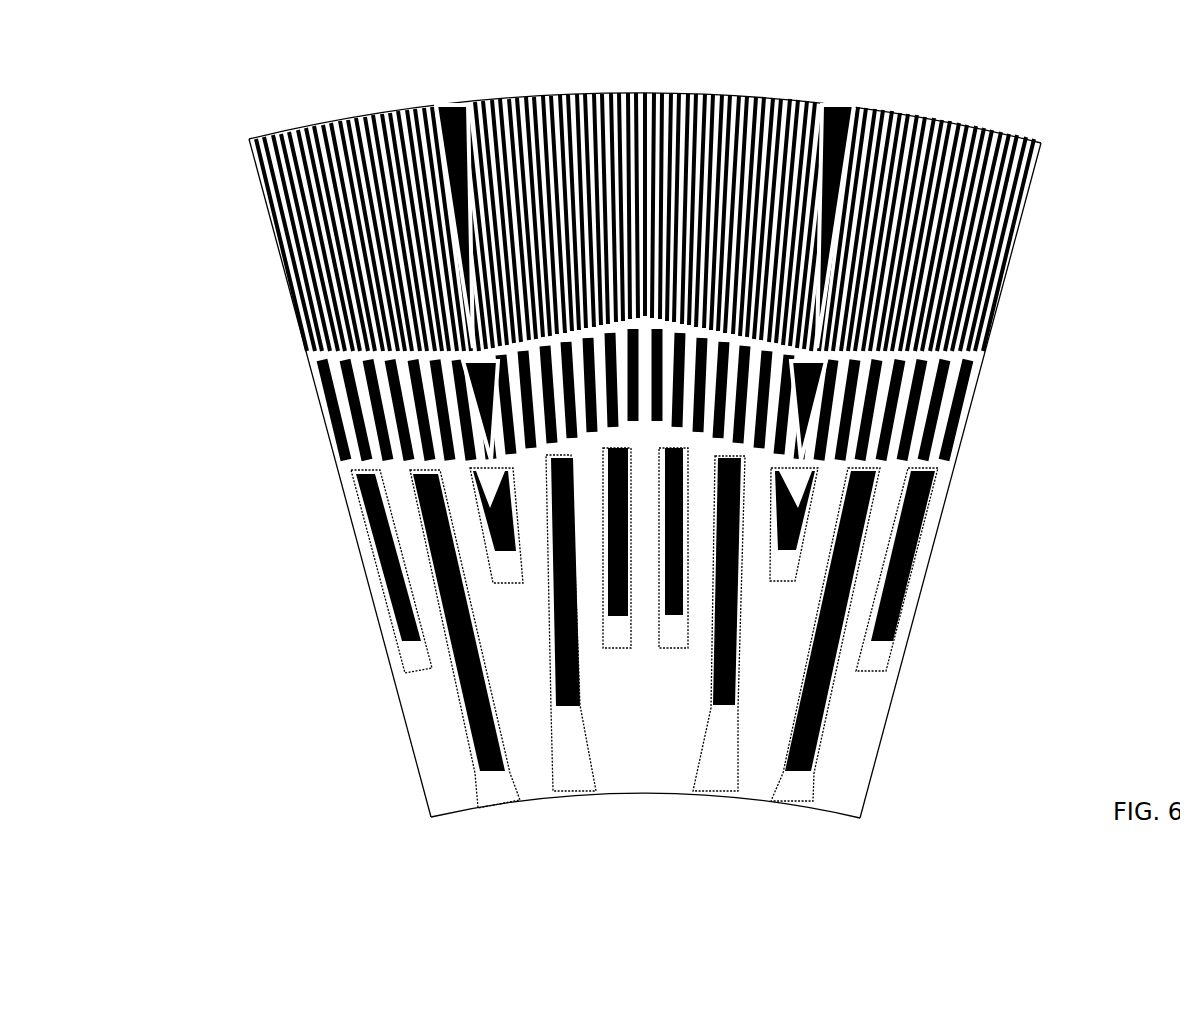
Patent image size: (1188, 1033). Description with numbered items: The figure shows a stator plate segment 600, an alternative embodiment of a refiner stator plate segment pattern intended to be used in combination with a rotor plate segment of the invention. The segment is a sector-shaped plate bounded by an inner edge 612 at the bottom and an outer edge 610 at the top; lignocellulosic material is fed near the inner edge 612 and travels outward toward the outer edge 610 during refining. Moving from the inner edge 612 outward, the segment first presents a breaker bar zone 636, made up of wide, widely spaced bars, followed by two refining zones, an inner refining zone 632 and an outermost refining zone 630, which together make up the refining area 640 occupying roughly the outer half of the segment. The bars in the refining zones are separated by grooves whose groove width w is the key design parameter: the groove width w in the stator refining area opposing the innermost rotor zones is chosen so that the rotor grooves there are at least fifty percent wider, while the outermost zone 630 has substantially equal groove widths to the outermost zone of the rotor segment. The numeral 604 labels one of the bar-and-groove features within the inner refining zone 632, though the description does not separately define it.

The stator plate segment 600 is at (238, 110).
The outer edge 610 is at (722, 88).
The inner edge 612 is at (632, 785).
The slot 604 is at (322, 410).
The refining zone 630 is at (690, 229).
The refining zone 632 is at (948, 457).
The breaker bar zone 636 is at (692, 635).
The refining area 640 is at (1126, 318).
The groove width w is at (350, 432).